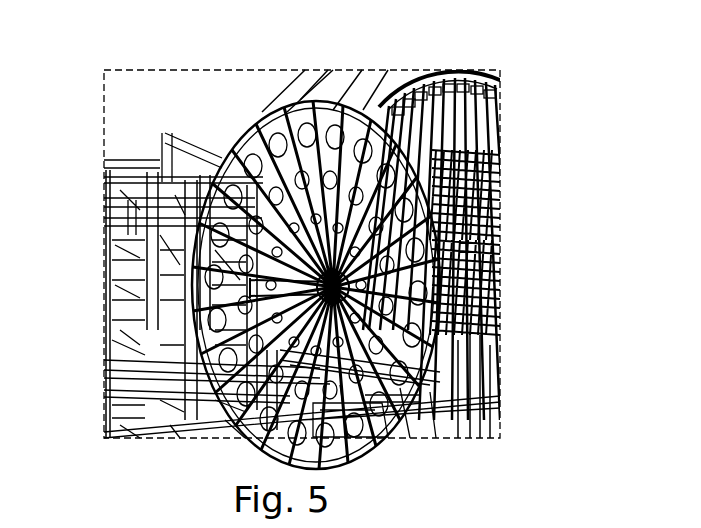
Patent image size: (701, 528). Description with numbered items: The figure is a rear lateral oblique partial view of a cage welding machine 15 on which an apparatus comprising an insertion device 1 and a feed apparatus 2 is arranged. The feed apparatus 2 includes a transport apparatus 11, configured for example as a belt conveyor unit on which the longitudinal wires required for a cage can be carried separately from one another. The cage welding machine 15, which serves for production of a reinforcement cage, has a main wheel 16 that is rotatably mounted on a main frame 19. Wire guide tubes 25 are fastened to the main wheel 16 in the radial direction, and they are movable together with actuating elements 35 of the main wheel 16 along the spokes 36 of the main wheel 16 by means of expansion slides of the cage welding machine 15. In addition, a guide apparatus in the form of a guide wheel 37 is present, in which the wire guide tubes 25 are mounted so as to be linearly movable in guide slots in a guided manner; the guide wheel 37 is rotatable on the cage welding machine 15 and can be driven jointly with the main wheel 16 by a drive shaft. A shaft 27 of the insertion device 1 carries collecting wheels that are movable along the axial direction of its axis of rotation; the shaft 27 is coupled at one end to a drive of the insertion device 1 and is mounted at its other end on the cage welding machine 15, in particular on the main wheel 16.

The insertion device 1 is at (190, 64).
The feed apparatus 2 is at (80, 358).
The transport apparatus 11 is at (110, 245).
The cage welding machine 15 is at (316, 62).
The main wheel 16 is at (367, 87).
The main frame 19 is at (293, 90).
The wire guide tubes 25 is at (500, 268).
The shaft 27 is at (296, 426).
The actuating elements 35 is at (500, 214).
The spokes 36 is at (422, 128).
The guide wheel 37 is at (252, 166).